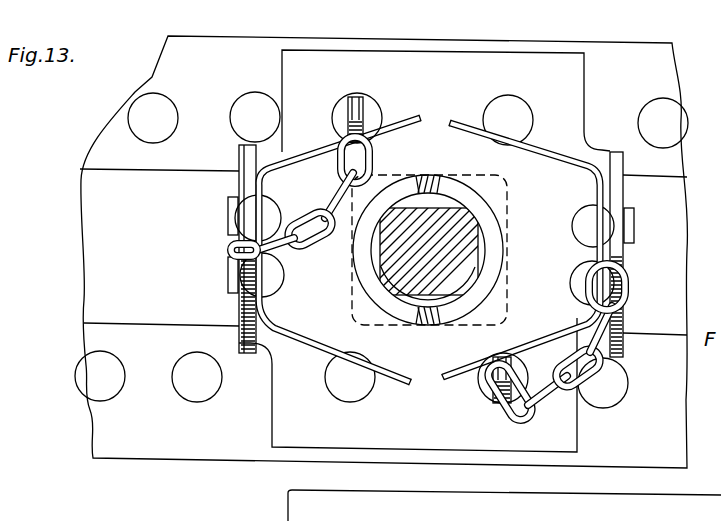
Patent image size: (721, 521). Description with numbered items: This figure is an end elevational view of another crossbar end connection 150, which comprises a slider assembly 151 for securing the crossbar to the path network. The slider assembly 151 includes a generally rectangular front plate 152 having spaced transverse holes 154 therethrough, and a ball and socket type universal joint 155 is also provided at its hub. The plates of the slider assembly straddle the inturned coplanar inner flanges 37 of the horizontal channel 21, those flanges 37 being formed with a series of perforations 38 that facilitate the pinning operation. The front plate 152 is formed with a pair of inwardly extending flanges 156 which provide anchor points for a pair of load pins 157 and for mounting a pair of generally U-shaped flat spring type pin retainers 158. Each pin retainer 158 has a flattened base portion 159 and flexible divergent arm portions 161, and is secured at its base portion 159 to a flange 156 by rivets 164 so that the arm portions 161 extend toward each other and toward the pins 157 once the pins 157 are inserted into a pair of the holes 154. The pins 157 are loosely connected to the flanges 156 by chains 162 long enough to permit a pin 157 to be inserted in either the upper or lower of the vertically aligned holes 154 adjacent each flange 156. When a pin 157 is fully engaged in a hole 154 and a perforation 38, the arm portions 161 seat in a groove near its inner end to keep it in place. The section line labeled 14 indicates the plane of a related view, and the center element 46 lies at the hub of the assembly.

The section line 14- 14 is at (240, 20).
The horizontal channel 21 is at (82, 300).
The inner flange 37 is at (132, 170).
The perforation 38 is at (171, 126).
The shaft 46 is at (482, 262).
The crossbar end connection 150 is at (252, 470).
The slider assembly 151 is at (648, 448).
The front plate 152 is at (643, 76).
The hole 154 is at (540, 85).
The ball and socket type universal joint 155 is at (567, 210).
The flange 156 is at (240, 180).
The load pin 157 is at (430, 86).
The pin retainer 158 is at (338, 326).
The base portion 159 is at (330, 291).
The arm portion 161 is at (464, 127).
The chain 162 is at (325, 196).
The rivet 164 is at (230, 213).